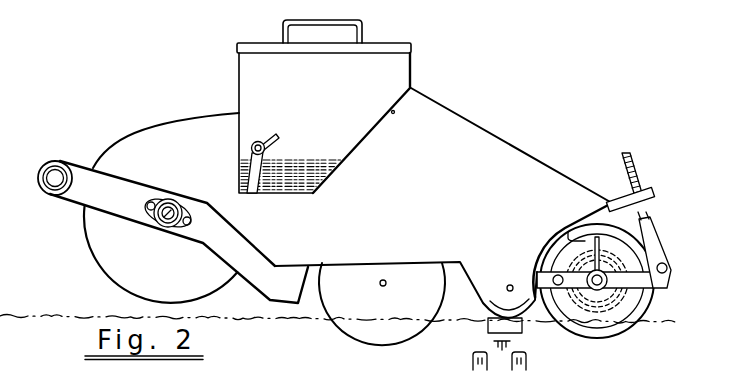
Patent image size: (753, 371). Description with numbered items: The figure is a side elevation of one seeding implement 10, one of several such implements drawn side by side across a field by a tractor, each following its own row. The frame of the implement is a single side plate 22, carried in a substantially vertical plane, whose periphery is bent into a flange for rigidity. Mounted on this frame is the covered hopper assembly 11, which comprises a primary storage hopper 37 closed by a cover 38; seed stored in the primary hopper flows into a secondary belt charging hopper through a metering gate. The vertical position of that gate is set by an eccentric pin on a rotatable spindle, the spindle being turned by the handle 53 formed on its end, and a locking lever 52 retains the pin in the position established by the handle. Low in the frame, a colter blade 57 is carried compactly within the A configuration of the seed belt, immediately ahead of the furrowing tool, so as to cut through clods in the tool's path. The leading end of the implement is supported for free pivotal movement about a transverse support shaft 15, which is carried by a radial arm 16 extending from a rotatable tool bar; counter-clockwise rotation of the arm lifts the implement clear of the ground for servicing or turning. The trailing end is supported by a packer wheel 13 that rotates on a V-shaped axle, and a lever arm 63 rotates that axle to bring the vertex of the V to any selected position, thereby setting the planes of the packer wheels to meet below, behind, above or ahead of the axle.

The seeding implement 10 is at (514, 95).
The hopper assembly 11 is at (413, 67).
The packer wheel 13 is at (633, 306).
The support shaft 15 is at (158, 227).
The radial arm 16 is at (263, 271).
The side plate 22 is at (440, 194).
The primary storage hopper 37 is at (258, 80).
The cover 38 is at (248, 43).
The locking lever 52 is at (245, 194).
The handle 53 is at (280, 140).
The colter blade 57 is at (423, 296).
The lever arm 63 is at (565, 228).